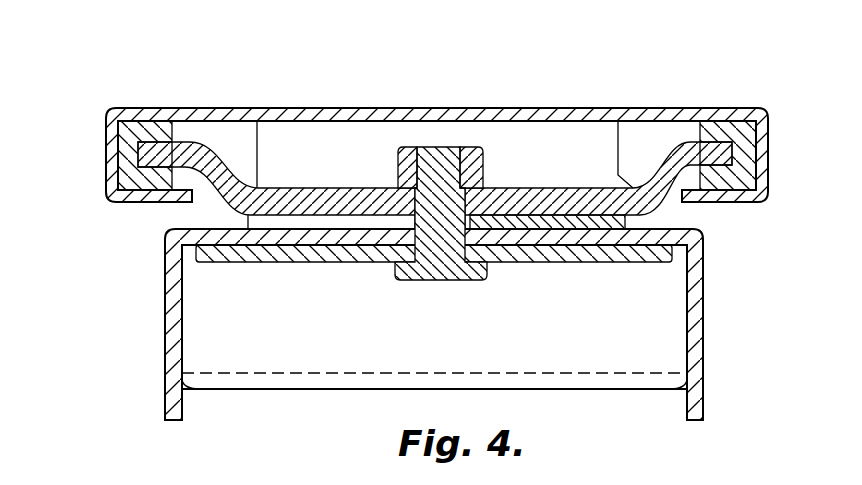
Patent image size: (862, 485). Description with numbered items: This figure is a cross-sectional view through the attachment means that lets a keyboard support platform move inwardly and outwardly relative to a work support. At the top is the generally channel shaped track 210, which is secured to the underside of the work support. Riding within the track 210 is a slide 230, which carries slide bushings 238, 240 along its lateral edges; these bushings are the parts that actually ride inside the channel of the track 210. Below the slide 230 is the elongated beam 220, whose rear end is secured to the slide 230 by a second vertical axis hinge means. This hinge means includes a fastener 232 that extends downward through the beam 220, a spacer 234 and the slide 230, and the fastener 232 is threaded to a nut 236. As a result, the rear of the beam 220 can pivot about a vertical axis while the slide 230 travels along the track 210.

The track 210 is at (604, 110).
The beam 220 is at (703, 350).
The slide 230 is at (684, 148).
The fastener 232 is at (397, 264).
The spacer 234 is at (636, 219).
The nut 236 is at (466, 146).
The slide bushing 238 is at (128, 130).
The slide bushing 240 is at (745, 153).